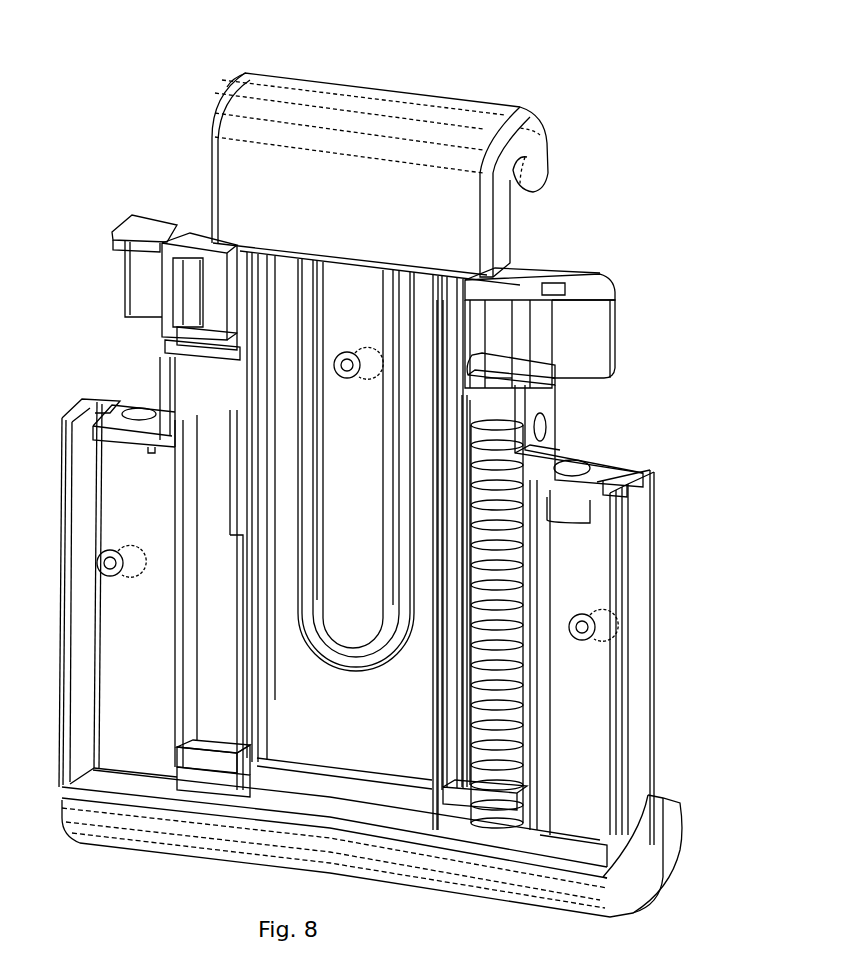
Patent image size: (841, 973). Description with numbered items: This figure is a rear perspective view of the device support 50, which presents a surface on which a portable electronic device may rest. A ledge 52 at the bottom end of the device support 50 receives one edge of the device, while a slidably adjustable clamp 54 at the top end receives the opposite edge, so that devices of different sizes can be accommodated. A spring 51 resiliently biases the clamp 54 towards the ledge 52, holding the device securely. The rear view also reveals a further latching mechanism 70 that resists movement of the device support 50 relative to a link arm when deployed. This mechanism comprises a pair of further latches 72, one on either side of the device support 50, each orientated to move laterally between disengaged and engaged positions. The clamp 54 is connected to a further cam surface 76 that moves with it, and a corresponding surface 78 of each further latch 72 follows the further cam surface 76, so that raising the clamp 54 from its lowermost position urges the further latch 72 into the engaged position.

The device support 50 is at (640, 655).
The spring 51 is at (527, 600).
The ledge 52 is at (663, 862).
The clamp 54 is at (433, 128).
The further latching mechanism 70 is at (366, 353).
The further latch 72 is at (163, 347).
The further cam surface 76 is at (243, 372).
The corresponding surface 78 is at (215, 352).